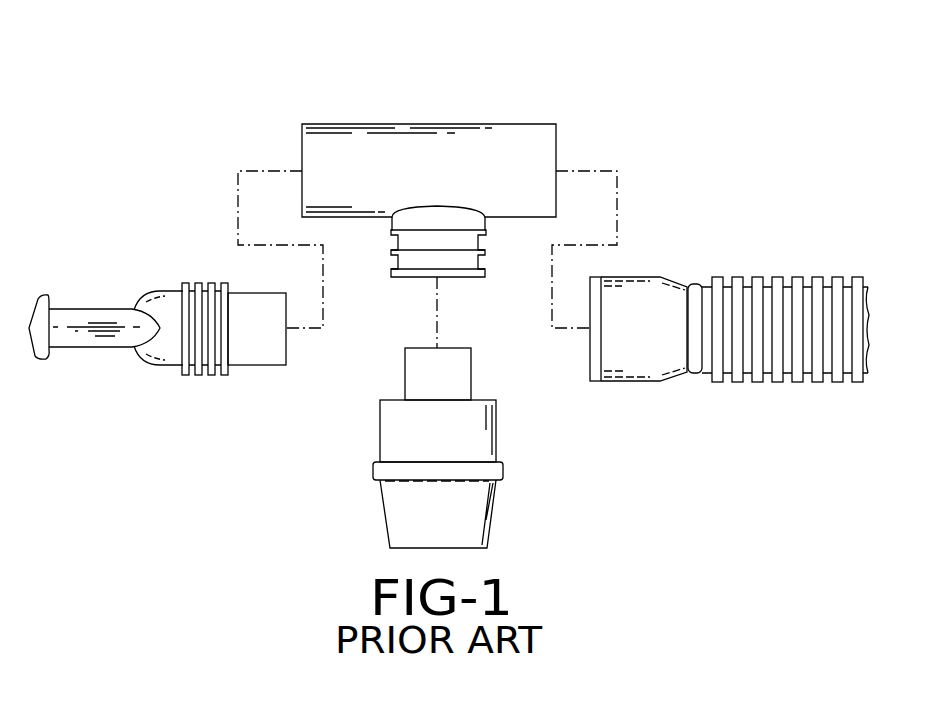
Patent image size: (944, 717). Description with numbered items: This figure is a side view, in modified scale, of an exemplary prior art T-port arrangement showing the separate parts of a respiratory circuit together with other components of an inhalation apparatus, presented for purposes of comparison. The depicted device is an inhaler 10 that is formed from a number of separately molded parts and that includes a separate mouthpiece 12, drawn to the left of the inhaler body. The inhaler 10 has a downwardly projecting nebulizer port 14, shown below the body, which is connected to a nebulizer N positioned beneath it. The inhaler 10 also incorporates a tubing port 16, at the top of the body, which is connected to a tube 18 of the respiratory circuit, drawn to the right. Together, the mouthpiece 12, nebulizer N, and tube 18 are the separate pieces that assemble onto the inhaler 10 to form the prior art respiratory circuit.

The inhaler 10 is at (327, 124).
The mouthpiece 12 is at (88, 308).
The nebulizer port 14 is at (486, 252).
The tubing port 16 is at (421, 124).
The tube 18 is at (670, 281).
The nebulizer N is at (496, 447).